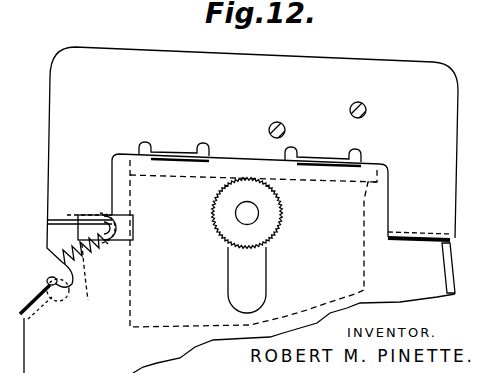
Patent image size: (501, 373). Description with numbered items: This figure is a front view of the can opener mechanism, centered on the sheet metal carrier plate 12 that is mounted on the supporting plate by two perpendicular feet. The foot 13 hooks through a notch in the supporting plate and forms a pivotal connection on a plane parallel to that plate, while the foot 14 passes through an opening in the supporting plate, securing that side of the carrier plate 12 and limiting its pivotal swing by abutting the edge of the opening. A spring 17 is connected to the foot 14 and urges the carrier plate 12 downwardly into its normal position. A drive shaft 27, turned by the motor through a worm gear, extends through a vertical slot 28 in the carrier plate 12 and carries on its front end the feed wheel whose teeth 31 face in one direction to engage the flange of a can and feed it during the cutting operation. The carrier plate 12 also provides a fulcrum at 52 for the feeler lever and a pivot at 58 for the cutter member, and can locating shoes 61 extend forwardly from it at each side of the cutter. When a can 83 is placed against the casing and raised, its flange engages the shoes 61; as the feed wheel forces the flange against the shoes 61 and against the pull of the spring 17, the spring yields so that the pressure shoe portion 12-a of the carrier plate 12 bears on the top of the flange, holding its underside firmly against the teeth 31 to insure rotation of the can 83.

The carrier plate 12 is at (125, 60).
The pressure shoe portion 12-a is at (233, 162).
The foot 13 is at (408, 232).
The foot 14 is at (60, 218).
The spring 17 is at (64, 276).
The drive shaft 27 is at (258, 212).
The vertical slot 28 is at (266, 271).
The teeth 31 is at (274, 222).
The fulcrum 52 is at (368, 110).
The pivot 58 is at (282, 124).
The can locating shoes 61 is at (172, 153).
The can 83 is at (128, 327).